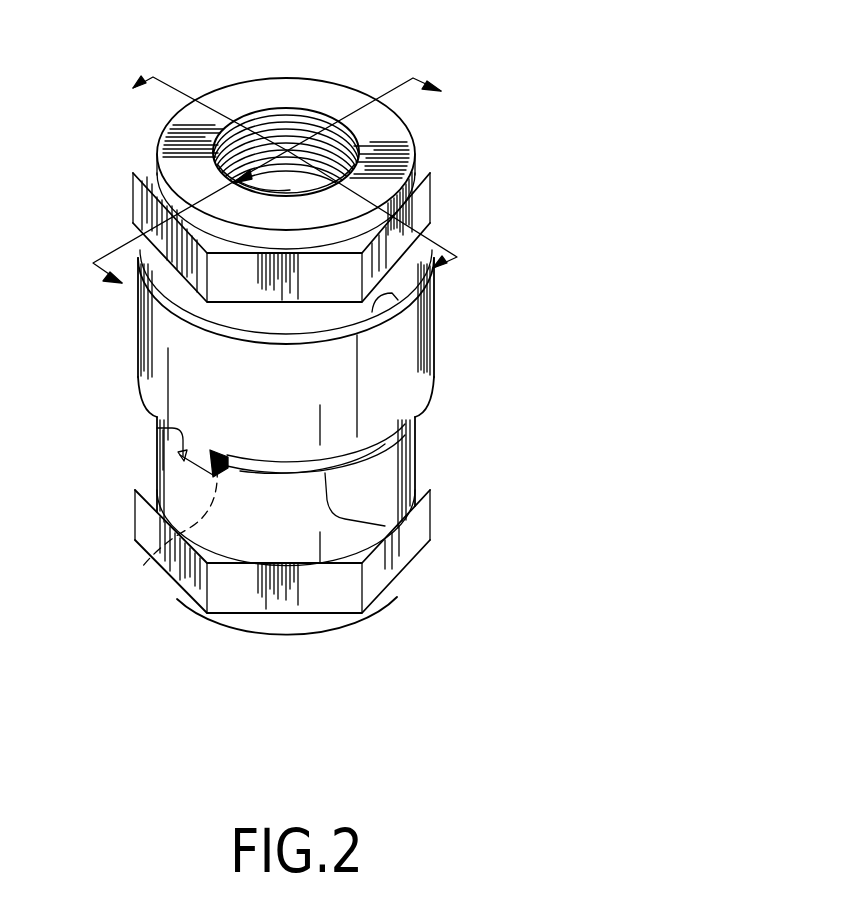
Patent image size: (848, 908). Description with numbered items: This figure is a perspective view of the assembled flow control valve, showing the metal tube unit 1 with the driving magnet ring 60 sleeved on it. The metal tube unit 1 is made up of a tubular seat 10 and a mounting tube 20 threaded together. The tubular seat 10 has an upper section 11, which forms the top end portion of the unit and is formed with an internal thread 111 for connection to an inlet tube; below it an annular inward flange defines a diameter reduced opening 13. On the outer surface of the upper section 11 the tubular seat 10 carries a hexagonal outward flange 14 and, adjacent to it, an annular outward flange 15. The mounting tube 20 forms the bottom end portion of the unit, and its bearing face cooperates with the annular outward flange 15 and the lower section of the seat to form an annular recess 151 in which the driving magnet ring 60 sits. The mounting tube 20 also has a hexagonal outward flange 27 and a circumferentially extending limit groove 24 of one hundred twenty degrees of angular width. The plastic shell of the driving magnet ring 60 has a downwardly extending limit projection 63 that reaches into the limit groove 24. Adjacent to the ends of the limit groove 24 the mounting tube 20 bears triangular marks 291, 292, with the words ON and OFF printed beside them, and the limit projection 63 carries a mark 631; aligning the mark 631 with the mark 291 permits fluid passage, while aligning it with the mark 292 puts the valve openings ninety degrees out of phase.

The metal tube unit 1 is at (294, 322).
The tubular seat 10 is at (319, 156).
The upper section 11 is at (287, 107).
The internal thread 111 is at (313, 120).
The diameter reduced opening 13 is at (270, 183).
The hexagonal outward flange 14 is at (418, 210).
The annular outward flange 15 is at (307, 313).
The annular recess 151 is at (420, 300).
The driving magnet ring 60 is at (495, 365).
The mounting tube 20 is at (303, 513).
The triangular mark 292 is at (408, 434).
The triangular mark 291 is at (144, 568).
The limit groove 24 is at (388, 529).
The hexagonal outward flange 27 is at (420, 517).
The limit projection 63 is at (129, 450).
The mark 631 is at (156, 427).